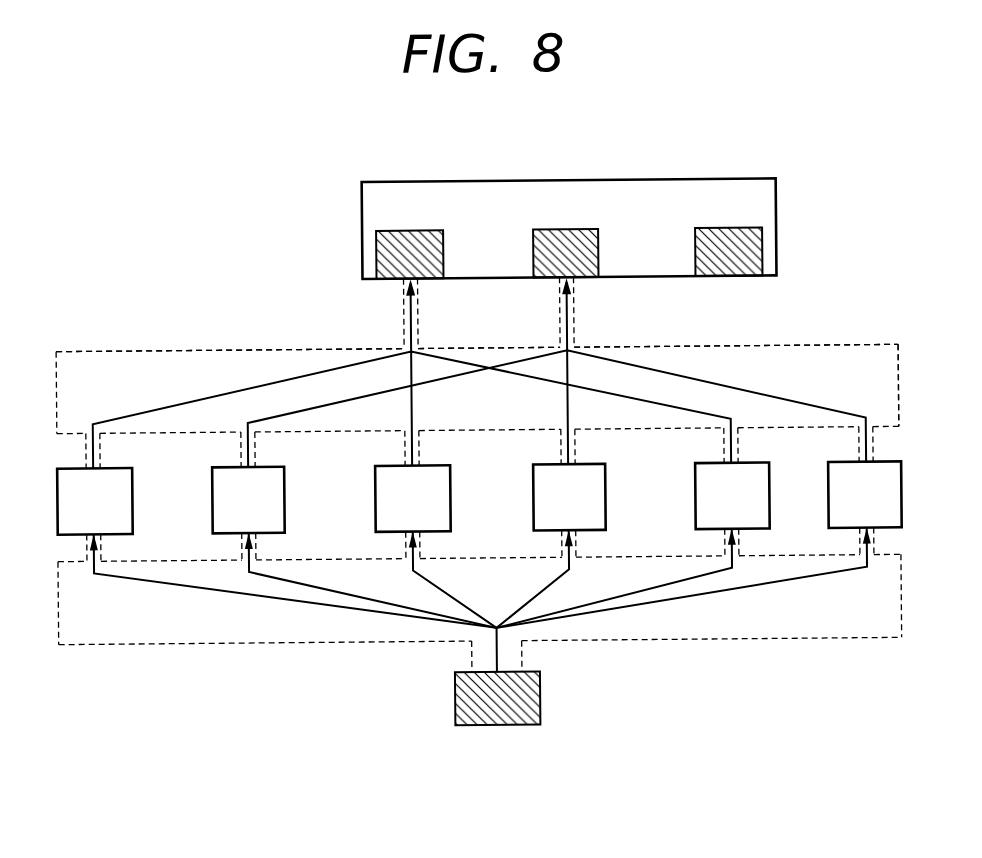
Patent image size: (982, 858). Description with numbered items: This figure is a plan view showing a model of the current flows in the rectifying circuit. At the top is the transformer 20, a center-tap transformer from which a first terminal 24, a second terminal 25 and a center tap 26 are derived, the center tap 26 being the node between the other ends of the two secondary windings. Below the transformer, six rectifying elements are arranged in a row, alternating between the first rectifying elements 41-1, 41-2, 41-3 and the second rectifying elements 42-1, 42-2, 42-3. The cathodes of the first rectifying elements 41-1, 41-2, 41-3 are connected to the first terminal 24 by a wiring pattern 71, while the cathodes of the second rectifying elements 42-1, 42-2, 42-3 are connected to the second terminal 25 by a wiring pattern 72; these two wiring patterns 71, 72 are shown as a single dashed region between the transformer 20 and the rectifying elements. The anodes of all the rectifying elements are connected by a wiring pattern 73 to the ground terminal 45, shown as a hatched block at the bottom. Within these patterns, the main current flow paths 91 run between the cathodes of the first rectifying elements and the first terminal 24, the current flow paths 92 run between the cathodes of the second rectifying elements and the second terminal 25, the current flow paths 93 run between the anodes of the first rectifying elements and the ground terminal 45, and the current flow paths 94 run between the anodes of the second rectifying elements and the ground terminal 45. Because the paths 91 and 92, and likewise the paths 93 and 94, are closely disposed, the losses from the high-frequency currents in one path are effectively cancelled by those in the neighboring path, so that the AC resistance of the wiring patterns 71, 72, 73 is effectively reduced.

The transformer 20 is at (779, 204).
The first terminal 24 is at (421, 238).
The second terminal 25 is at (576, 238).
The center tap 26 is at (742, 238).
The first rectifying element 41-1 is at (95, 501).
The second rectifying element 42-1 is at (248, 500).
The first rectifying element 41-2 is at (413, 498).
The second rectifying element 42-2 is at (569, 497).
The first rectifying element 41-3 is at (732, 495).
The second rectifying element 42-3 is at (865, 494).
The ground terminal 45 is at (539, 691).
The wiring pattern 71 is at (829, 347).
The wiring pattern 72 is at (477, 388).
The wiring pattern 73 is at (829, 641).
The current flow paths 91 is at (203, 397).
The current flow paths 92 is at (350, 398).
The current flow paths 93 is at (213, 589).
The current flow paths 94 is at (339, 591).